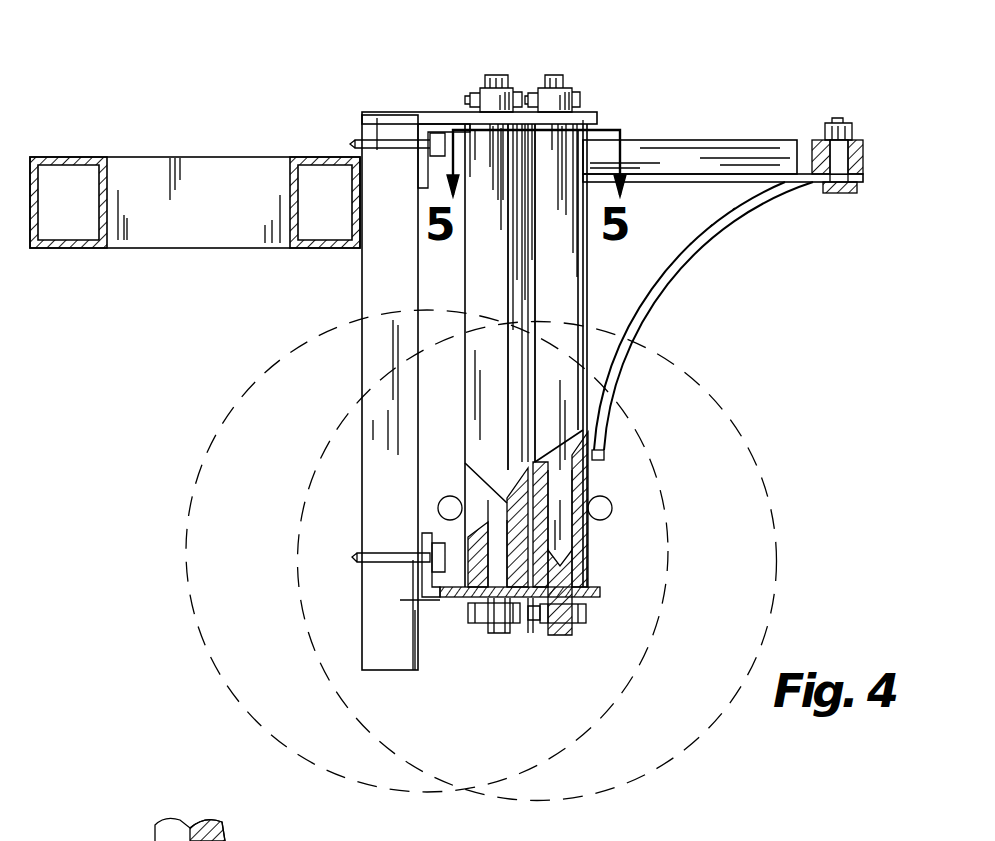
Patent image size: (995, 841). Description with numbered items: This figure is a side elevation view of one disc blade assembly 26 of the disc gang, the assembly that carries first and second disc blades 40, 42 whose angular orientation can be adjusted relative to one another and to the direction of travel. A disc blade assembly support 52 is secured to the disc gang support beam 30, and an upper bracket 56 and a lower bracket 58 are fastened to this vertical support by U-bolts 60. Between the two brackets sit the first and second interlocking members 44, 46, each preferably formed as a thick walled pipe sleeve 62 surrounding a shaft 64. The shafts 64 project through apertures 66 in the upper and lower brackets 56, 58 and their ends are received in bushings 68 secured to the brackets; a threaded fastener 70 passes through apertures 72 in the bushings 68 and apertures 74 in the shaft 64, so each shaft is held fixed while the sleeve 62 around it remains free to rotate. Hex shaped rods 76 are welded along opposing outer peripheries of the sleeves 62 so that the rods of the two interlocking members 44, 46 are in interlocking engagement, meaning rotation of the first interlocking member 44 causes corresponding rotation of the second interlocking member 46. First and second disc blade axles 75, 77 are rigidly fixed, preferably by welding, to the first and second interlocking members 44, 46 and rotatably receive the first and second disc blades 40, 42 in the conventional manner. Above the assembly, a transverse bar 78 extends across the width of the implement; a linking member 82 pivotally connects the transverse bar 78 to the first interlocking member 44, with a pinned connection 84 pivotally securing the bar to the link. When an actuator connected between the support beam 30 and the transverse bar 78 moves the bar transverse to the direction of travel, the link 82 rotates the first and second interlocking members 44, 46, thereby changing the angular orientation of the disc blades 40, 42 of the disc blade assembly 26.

The disc blade assembly 26 is at (772, 297).
The disc gang support beam 30 is at (236, 157).
The first disc blade 40 is at (777, 547).
The second disc blade 42 is at (210, 538).
The first interlocking member 44 is at (560, 377).
The second interlocking member 46 is at (478, 276).
The disc blade assembly support 52 is at (272, 372).
The upper bracket 56 is at (440, 112).
The lower bracket 58 is at (430, 600).
The U-bolts 60 is at (355, 143).
The pipe sleeves 62 is at (470, 535).
The shaft 64 is at (500, 505).
The apertures 66 is at (476, 86).
The bushings 68 is at (510, 92).
The threaded fastener 70 is at (517, 96).
The apertures 72 is at (585, 590).
The apertures 74 is at (503, 645).
The first disc blade axle 75 is at (610, 505).
The hex shaped rods 76 is at (530, 312).
The second disc blade axle 77 is at (440, 508).
The transverse bar 78 is at (860, 165).
The linking member 82 is at (670, 196).
The pinned connection 84 is at (900, 80).